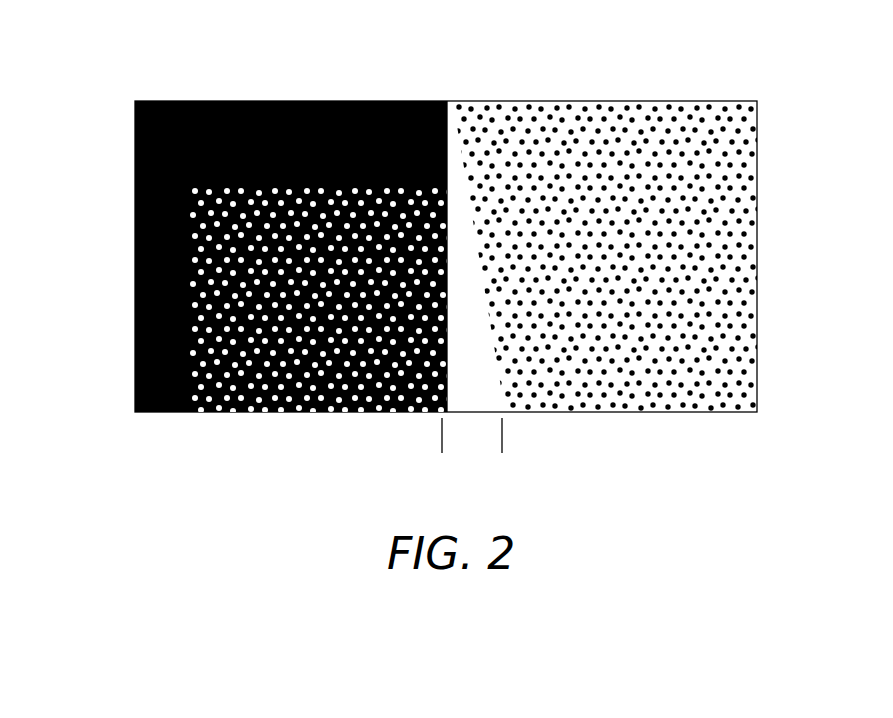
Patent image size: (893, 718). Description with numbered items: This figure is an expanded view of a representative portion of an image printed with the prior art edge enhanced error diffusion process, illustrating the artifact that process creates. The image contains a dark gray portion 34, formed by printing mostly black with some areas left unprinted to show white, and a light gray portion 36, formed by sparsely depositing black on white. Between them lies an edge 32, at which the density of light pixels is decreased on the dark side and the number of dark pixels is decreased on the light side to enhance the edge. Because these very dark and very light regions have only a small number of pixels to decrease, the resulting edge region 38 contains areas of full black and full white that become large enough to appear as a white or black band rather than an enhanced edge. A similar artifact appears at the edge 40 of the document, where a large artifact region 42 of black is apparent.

The edge 32 is at (447, 100).
The dark gray portion of the image 34 is at (240, 415).
The light gray portion of the image 36 is at (623, 415).
The edge region 38 is at (560, 445).
The edge of the document 40 is at (315, 100).
The artifact region 42 is at (124, 146).